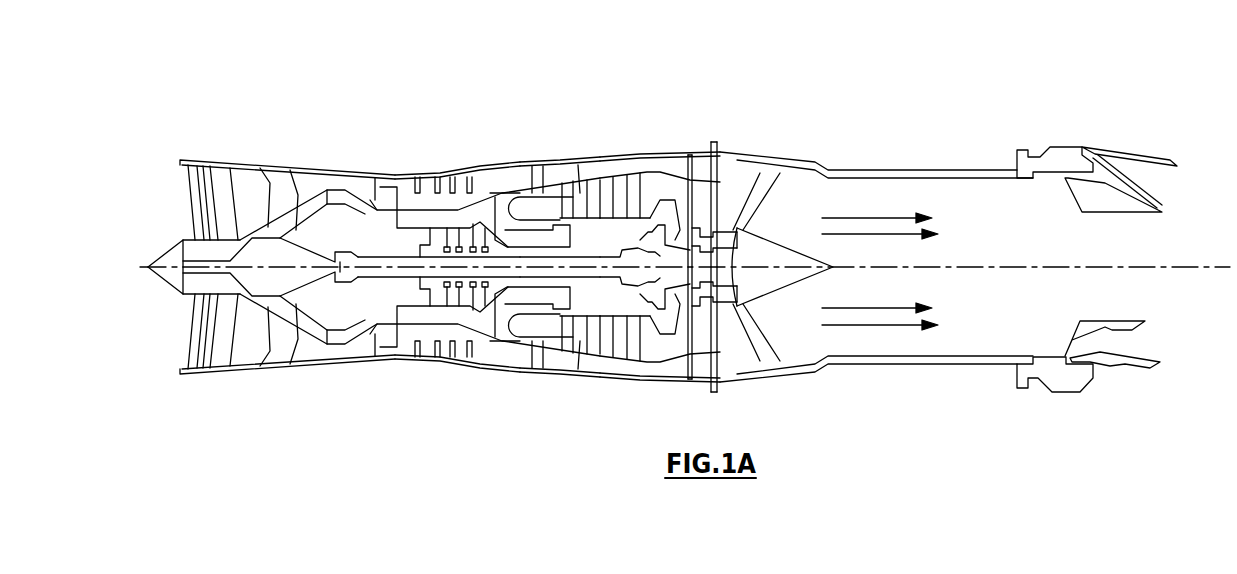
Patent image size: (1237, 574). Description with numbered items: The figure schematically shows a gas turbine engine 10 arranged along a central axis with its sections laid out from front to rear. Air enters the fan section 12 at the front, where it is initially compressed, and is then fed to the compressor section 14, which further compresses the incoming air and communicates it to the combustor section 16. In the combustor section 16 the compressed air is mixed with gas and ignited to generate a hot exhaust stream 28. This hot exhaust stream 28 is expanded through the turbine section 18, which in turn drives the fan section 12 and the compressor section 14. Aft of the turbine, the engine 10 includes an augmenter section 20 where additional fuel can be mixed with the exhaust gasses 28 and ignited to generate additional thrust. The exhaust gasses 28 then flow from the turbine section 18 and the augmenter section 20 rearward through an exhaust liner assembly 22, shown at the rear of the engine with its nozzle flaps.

The gas turbine engine 10 is at (662, 219).
The fan section 12 is at (368, 104).
The compressor section 14 is at (518, 104).
The combustor section 16 is at (592, 104).
The turbine section 18 is at (733, 104).
The augmenter section 20 is at (785, 104).
The exhaust liner assembly 22 is at (788, 104).
The hot exhaust stream 28 is at (887, 333).